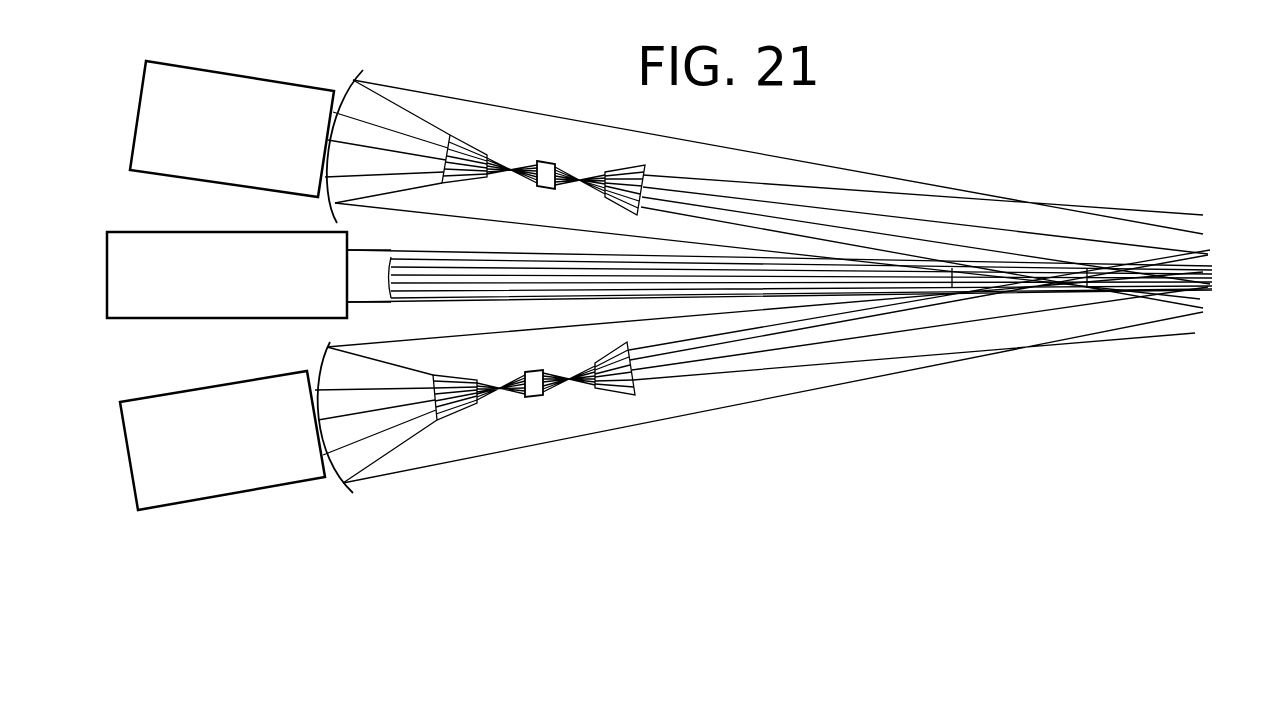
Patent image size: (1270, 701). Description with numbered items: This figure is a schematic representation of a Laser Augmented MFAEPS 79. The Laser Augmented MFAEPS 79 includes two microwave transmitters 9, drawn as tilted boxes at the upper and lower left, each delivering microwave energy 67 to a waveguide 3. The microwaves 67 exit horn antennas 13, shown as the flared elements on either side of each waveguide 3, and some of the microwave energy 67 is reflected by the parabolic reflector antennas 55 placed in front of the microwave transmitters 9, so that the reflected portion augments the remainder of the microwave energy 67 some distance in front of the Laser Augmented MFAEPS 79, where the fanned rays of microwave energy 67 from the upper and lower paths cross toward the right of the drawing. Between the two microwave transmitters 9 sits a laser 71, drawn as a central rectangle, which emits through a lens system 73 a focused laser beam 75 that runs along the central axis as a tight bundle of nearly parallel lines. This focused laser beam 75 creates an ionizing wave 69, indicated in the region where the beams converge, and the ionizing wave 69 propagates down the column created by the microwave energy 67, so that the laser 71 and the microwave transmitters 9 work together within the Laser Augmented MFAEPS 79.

The microwave transmitter 9 is at (150, 176).
The parabolic reflector antenna 55 is at (345, 88).
The microwave energy 67 is at (415, 124).
The horn antenna 13 is at (482, 150).
The waveguide 3 is at (577, 163).
The laser 71 is at (250, 318).
The lens system 73 is at (367, 302).
The focused laser beam 75 is at (728, 297).
The ionizing wave 69 is at (1013, 275).
The Laser Augmented MFAEPS 79 is at (930, 163).